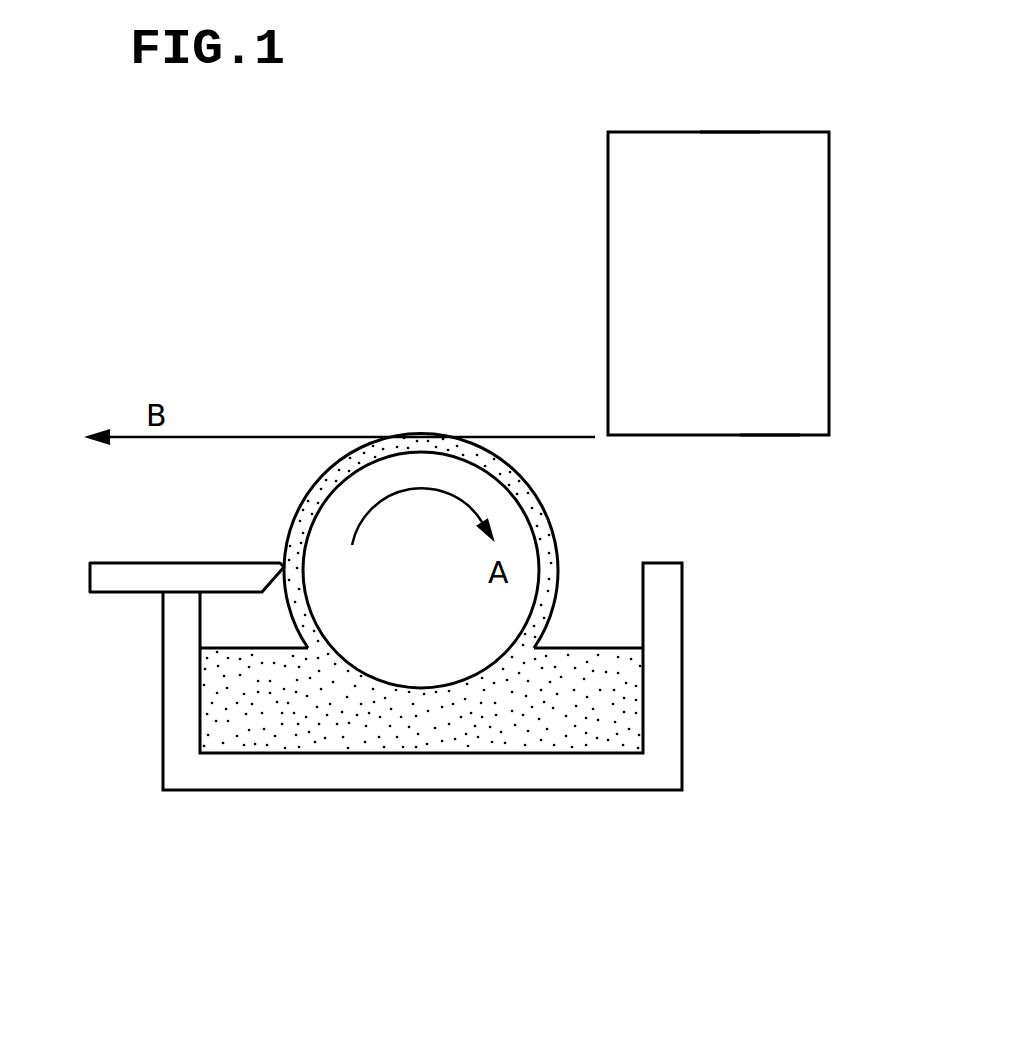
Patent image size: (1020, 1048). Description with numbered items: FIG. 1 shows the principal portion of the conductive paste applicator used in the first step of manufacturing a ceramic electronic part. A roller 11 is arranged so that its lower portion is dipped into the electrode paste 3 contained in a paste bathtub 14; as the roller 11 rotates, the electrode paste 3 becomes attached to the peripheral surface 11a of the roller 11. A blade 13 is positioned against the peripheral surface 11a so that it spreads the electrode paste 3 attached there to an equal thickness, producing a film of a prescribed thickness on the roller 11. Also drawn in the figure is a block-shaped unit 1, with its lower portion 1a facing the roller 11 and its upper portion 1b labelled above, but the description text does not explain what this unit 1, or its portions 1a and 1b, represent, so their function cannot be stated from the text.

The coating liquid supply unit 1 is at (829, 265).
The lower portion of supply unit 1a is at (770, 438).
The upper portion of supply unit 1b is at (732, 132).
The electrode paste 3 is at (307, 492).
The roller 11 is at (379, 686).
The peripheral surface 11a is at (533, 528).
The blade 13 is at (225, 562).
The paste bathtub 14 is at (682, 703).